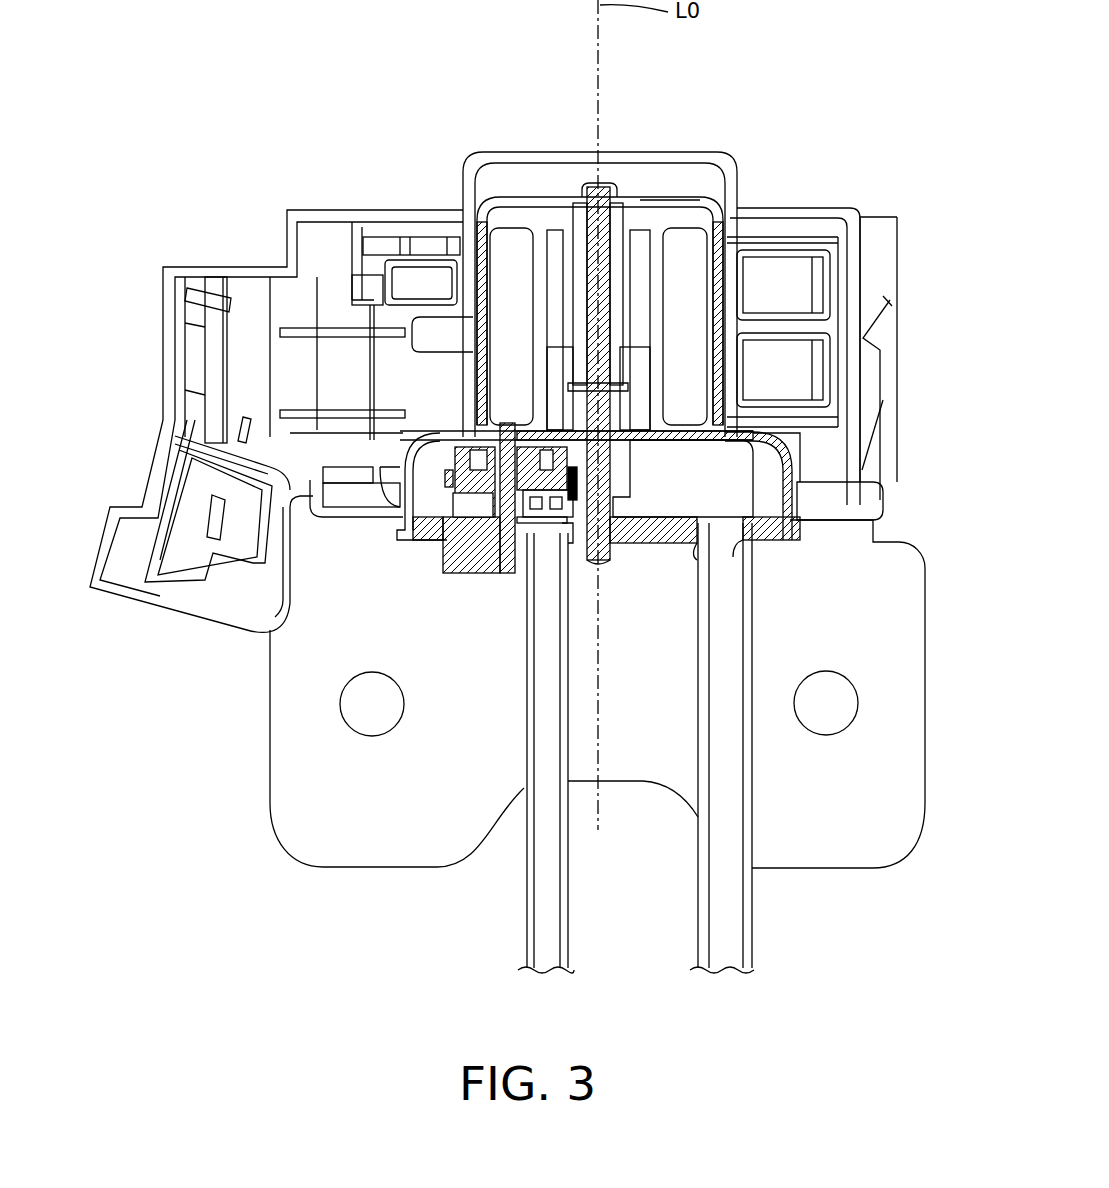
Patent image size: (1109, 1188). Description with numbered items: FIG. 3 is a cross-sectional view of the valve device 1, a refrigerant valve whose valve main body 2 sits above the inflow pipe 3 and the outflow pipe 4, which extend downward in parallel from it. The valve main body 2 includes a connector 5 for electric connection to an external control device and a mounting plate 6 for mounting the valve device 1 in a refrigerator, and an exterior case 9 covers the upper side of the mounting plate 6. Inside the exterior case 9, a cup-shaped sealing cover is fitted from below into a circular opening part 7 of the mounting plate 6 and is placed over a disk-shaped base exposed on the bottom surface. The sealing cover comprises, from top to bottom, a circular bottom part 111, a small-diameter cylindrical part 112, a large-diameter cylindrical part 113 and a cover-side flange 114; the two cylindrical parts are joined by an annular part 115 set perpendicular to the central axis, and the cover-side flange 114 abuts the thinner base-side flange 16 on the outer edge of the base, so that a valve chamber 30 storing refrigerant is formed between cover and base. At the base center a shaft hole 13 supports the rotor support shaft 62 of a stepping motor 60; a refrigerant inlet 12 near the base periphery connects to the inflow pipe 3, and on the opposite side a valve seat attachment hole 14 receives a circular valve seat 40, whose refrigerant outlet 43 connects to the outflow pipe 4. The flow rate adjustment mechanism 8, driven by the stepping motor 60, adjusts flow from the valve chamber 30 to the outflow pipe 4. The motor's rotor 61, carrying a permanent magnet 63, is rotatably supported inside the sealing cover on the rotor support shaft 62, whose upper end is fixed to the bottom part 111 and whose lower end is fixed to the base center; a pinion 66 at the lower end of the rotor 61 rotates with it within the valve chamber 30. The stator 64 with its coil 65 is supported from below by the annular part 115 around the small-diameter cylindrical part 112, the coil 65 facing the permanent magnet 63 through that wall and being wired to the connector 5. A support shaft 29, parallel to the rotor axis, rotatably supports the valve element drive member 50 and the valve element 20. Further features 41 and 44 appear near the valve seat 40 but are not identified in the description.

The valve device 1 is at (150, 110).
The valve main body 2 is at (150, 270).
The inflow pipe 3 is at (752, 928).
The outflow pipe 4 is at (526, 930).
The connector 5 is at (160, 573).
The mounting plate 6 is at (893, 565).
The circular opening part 7 is at (400, 530).
The flow rate adjustment mechanism 8 is at (430, 101).
The exterior case 9 is at (813, 207).
The refrigerant inlet 12 is at (733, 560).
The shaft hole 13 is at (600, 560).
The valve seat attachment hole 14 is at (443, 545).
The base-side flange 16 is at (787, 537).
The valve element 20 is at (400, 483).
The support shaft 29 is at (505, 423).
The valve chamber 30 is at (690, 488).
The valve seat 40 is at (443, 505).
The hub 41 is at (503, 573).
The refrigerant outlet 43 is at (553, 563).
The bearing 44 is at (520, 557).
The valve element drive member 50 is at (445, 440).
The stepping motor 60 is at (462, 136).
The rotor 61 is at (503, 218).
The rotor support shaft 62 is at (597, 187).
The permanent magnet 63 is at (693, 262).
The stator 64 is at (388, 252).
The coil 65 is at (768, 272).
The pinion 66 is at (630, 490).
The bottom part 111 is at (660, 205).
The small-diameter cylindrical part 112 is at (717, 310).
The large-diameter cylindrical part 113 is at (800, 483).
The cover-side flange 114 is at (793, 517).
The annular part 115 is at (783, 400).